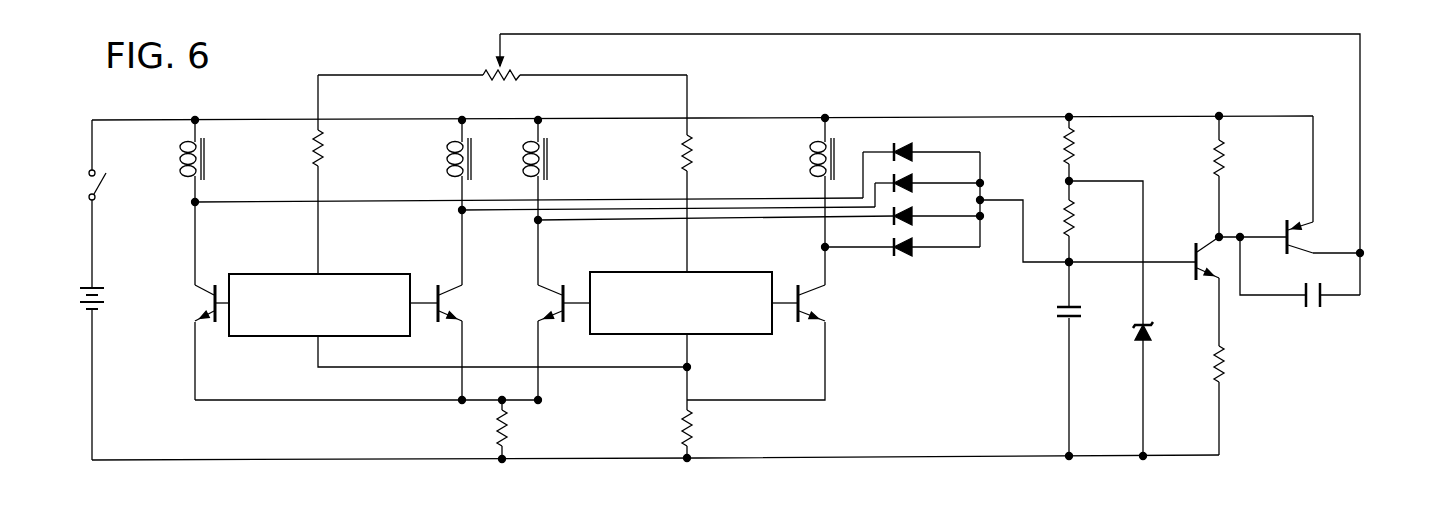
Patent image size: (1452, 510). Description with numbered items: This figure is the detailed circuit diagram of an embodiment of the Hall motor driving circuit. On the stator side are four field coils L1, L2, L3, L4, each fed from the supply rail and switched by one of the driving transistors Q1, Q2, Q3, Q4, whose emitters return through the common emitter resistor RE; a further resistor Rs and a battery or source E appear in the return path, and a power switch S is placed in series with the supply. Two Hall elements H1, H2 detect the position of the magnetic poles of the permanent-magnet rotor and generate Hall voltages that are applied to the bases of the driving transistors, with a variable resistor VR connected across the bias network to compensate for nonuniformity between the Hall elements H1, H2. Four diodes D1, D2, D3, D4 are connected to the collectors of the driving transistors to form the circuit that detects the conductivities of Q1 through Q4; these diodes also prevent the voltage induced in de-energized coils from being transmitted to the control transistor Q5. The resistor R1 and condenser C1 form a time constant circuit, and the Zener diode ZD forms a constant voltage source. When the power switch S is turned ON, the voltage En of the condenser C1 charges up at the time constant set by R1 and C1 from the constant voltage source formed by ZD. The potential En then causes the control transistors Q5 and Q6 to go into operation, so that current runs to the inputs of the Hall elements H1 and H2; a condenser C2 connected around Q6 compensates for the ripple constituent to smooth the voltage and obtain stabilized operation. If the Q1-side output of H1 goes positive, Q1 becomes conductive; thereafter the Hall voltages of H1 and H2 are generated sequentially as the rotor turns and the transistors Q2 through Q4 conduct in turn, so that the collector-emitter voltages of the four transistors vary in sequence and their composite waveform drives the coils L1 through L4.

The power switch S is at (104, 186).
The battery E is at (108, 298).
The field coil L1 is at (212, 158).
The field coil L2 is at (478, 158).
The field coil L3 is at (556, 158).
The field coil L4 is at (810, 158).
The variable resistor VR is at (490, 60).
The driving transistor Q1 is at (212, 304).
The driving transistor Q2 is at (448, 300).
The driving transistor Q3 is at (558, 309).
The driving transistor Q4 is at (808, 298).
The control transistor Q5 is at (1210, 246).
The control transistor Q6 is at (1296, 234).
The Hall element H1 is at (364, 274).
The Hall element H2 is at (742, 272).
The diode D1 is at (914, 146).
The diode D2 is at (914, 178).
The diode D3 is at (914, 211).
The diode D4 is at (914, 244).
The emitter resistor RE is at (508, 427).
The resistor Rs is at (692, 427).
The resistor R1 is at (1074, 219).
The voltage of C1 En is at (1067, 262).
The condenser C1 is at (1056, 312).
The Zener diode ZD is at (1140, 342).
The condenser C2 is at (1312, 309).